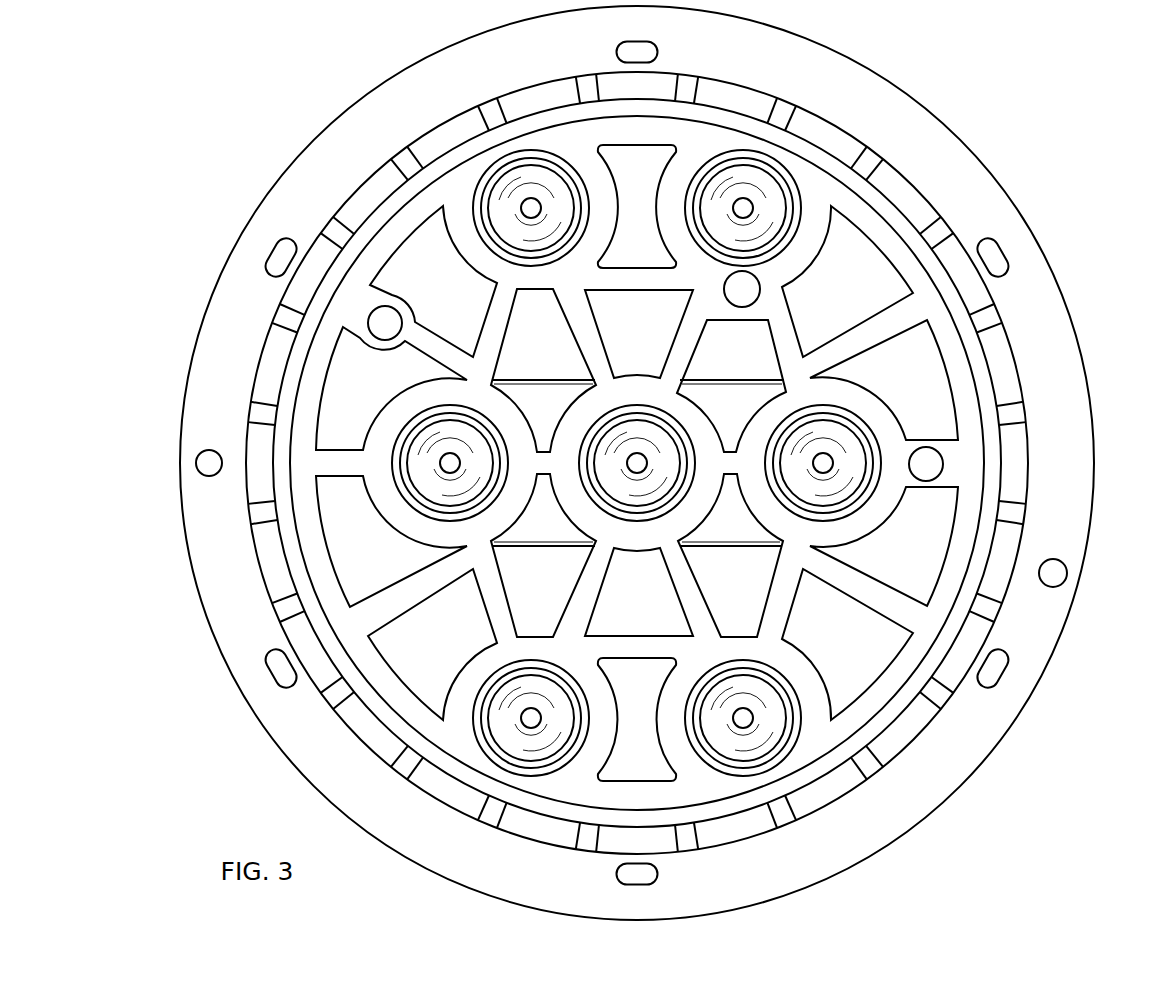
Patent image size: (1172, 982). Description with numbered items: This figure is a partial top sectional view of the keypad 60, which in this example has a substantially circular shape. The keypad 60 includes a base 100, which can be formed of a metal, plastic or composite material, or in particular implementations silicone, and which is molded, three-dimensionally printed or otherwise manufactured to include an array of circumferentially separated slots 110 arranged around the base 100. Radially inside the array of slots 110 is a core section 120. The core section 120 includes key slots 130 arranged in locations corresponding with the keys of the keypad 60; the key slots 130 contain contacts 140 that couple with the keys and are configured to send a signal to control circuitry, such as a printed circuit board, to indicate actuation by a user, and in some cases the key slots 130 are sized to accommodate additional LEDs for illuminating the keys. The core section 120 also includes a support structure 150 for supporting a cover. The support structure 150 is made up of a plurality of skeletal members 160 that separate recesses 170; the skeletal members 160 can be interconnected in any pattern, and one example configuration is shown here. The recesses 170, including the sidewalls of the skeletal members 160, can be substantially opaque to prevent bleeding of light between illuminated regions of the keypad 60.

The keypad 60 is at (265, 141).
The base 100 is at (396, 113).
The slots 110 is at (951, 222).
The core section 120 is at (831, 173).
The key slots 130 is at (517, 161).
The contacts 140 is at (721, 207).
The support structure 150 is at (419, 253).
The skeletal members 160 is at (508, 597).
The recesses 170 is at (343, 388).